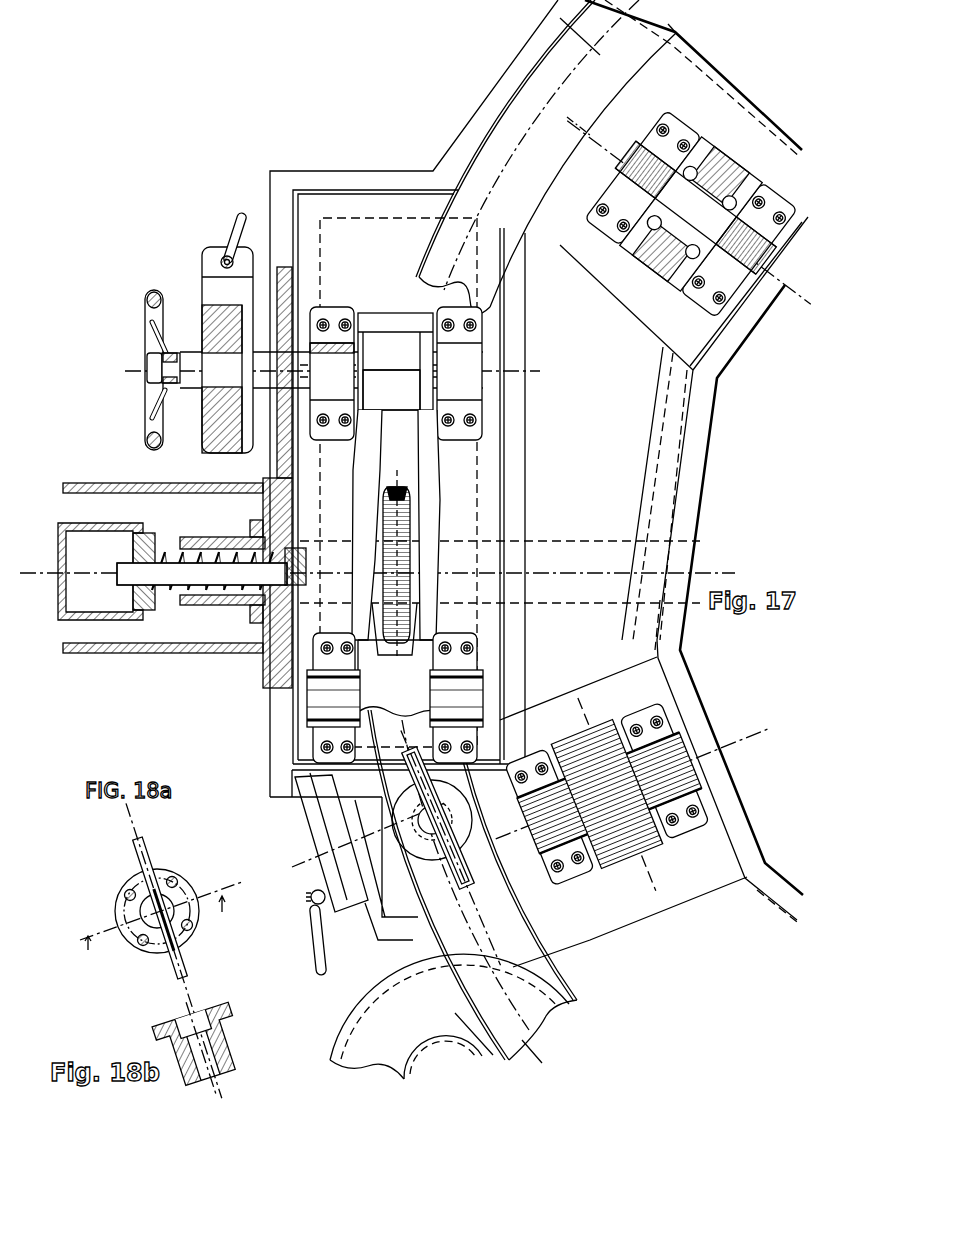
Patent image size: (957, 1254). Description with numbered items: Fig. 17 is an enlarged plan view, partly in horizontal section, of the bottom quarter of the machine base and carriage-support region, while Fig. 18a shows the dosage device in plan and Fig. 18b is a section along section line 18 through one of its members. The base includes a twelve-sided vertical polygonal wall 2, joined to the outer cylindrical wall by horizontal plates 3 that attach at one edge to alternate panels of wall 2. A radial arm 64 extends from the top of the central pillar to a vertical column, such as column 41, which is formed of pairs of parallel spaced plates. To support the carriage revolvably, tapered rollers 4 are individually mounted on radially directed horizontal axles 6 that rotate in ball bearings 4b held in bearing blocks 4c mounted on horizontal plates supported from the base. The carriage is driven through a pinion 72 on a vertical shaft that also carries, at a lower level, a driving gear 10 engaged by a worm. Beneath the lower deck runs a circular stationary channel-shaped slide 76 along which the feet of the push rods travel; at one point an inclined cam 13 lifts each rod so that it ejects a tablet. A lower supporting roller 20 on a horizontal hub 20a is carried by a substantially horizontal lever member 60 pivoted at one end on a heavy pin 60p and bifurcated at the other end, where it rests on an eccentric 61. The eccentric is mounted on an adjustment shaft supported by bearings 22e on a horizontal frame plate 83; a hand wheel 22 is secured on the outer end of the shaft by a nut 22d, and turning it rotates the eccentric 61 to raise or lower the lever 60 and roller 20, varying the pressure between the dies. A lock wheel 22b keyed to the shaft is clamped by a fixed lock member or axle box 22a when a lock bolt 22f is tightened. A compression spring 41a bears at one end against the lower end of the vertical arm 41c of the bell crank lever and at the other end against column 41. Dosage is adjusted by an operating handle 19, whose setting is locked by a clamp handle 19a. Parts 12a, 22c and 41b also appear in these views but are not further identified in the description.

In FIG. 17, the polygonal wall 2 is at (697, 435).
In FIG. 17, the horizontal plates 3 is at (682, 90).
In FIG. 17, the tapered rollers 4 is at (654, 493).
In FIG. 17, the ball bearings 4b is at (691, 214).
In FIG. 17, the bearing blocks 4c is at (691, 213).
In FIG. 17, the horizontal axles 6 is at (643, 288).
In FIG. 17, the driving gear 10 is at (372, 1028).
In FIG. 18A, the bushing 12a is at (137, 937).
In FIG. 18B, the bushing 12a is at (168, 1022).
In FIG. 17, the inclined cam 13 is at (467, 877).
In FIG. 18A, the inclined cam 13 is at (140, 845).
In FIG. 18A, the section line 18 is at (157, 922).
In FIG. 17, the operating handle 19 is at (318, 827).
In FIG. 17, the clamp handle 19a is at (312, 972).
In FIG. 17, the lower supporting roller 20 is at (405, 565).
In FIG. 17, the horizontal hub 20a is at (368, 553).
In FIG. 17, the hand wheel 22 is at (147, 425).
In FIG. 17, the fixed lock member 22a is at (205, 450).
In FIG. 17, the lock wheel 22b is at (212, 335).
In FIG. 17, the lock nut 22c is at (197, 392).
In FIG. 17, the nut 22d is at (145, 372).
In FIG. 17, the bearings 22e is at (462, 317).
In FIG. 17, the lock bolt 22f is at (221, 258).
In FIG. 17, the column 41 is at (125, 655).
In FIG. 17, the compression spring 41a is at (162, 592).
In FIG. 17, the spring housing 41b is at (222, 537).
In FIG. 17, the vertical arm 41c is at (72, 620).
In FIG. 17, the lever member 60 is at (372, 340).
In FIG. 17, the heavy pin 60p is at (310, 700).
In FIG. 17, the eccentric 61 is at (407, 418).
In FIG. 17, the radial arm 64 is at (557, 560).
In FIG. 17, the pinion 72 is at (444, 1062).
In FIG. 17, the slide 76 is at (560, 53).
In FIG. 17, the horizontal frame plate 83 is at (352, 195).